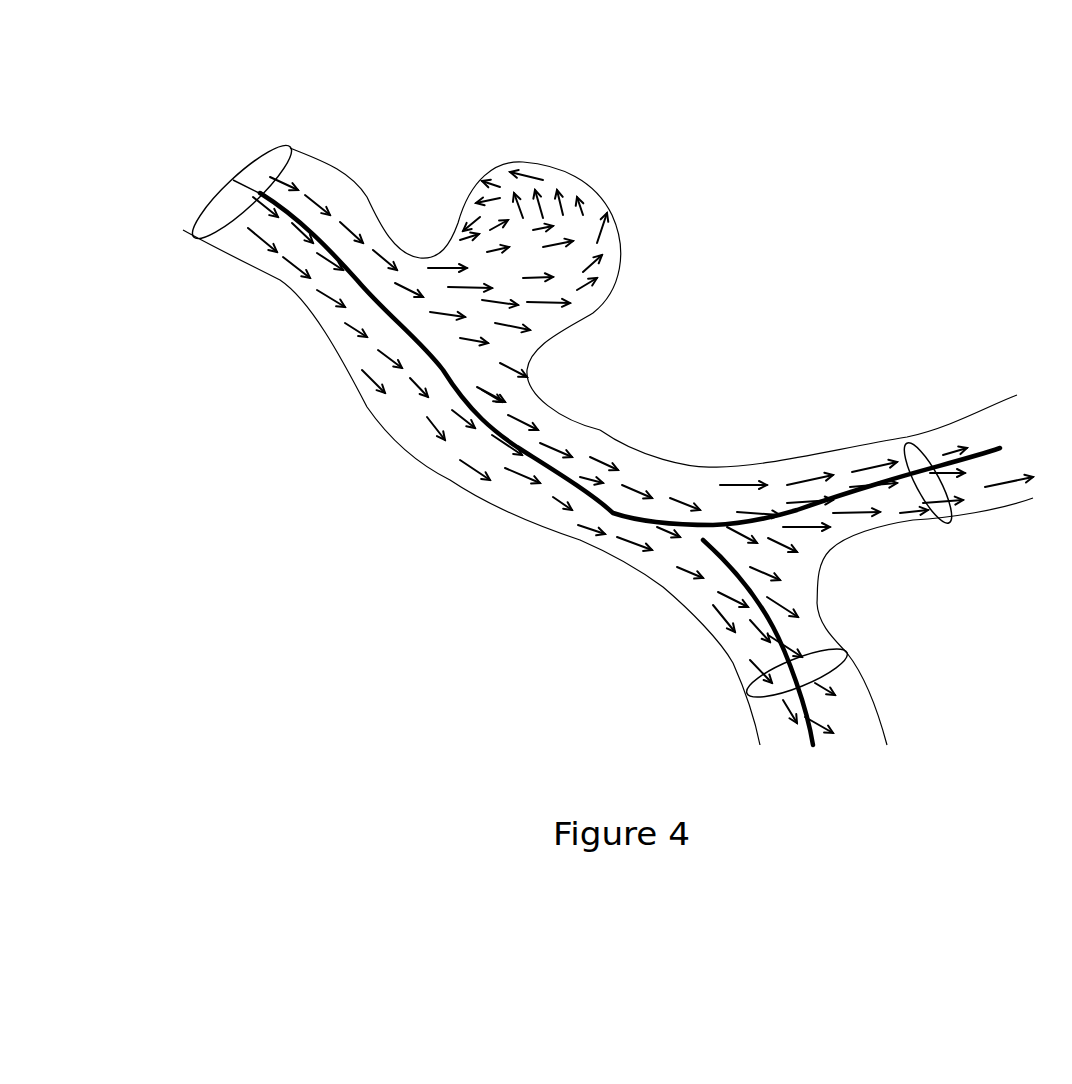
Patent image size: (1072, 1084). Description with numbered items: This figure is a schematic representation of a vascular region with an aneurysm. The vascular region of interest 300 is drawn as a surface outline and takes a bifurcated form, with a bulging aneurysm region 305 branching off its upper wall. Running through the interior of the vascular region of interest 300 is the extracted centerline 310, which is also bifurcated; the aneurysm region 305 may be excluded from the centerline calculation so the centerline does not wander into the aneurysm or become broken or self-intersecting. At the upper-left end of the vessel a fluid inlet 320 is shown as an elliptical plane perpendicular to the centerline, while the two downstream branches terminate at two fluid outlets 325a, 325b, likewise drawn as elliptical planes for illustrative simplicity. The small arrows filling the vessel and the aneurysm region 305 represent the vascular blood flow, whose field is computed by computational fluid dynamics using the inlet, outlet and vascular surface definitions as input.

The vascular region of interest 300 is at (460, 532).
The aneurysm region 305 is at (550, 240).
The extracted centerline 310 is at (557, 457).
The fluid inlet 320 is at (283, 140).
The fluid outlet 325a is at (917, 437).
The fluid outlet 325b is at (848, 648).